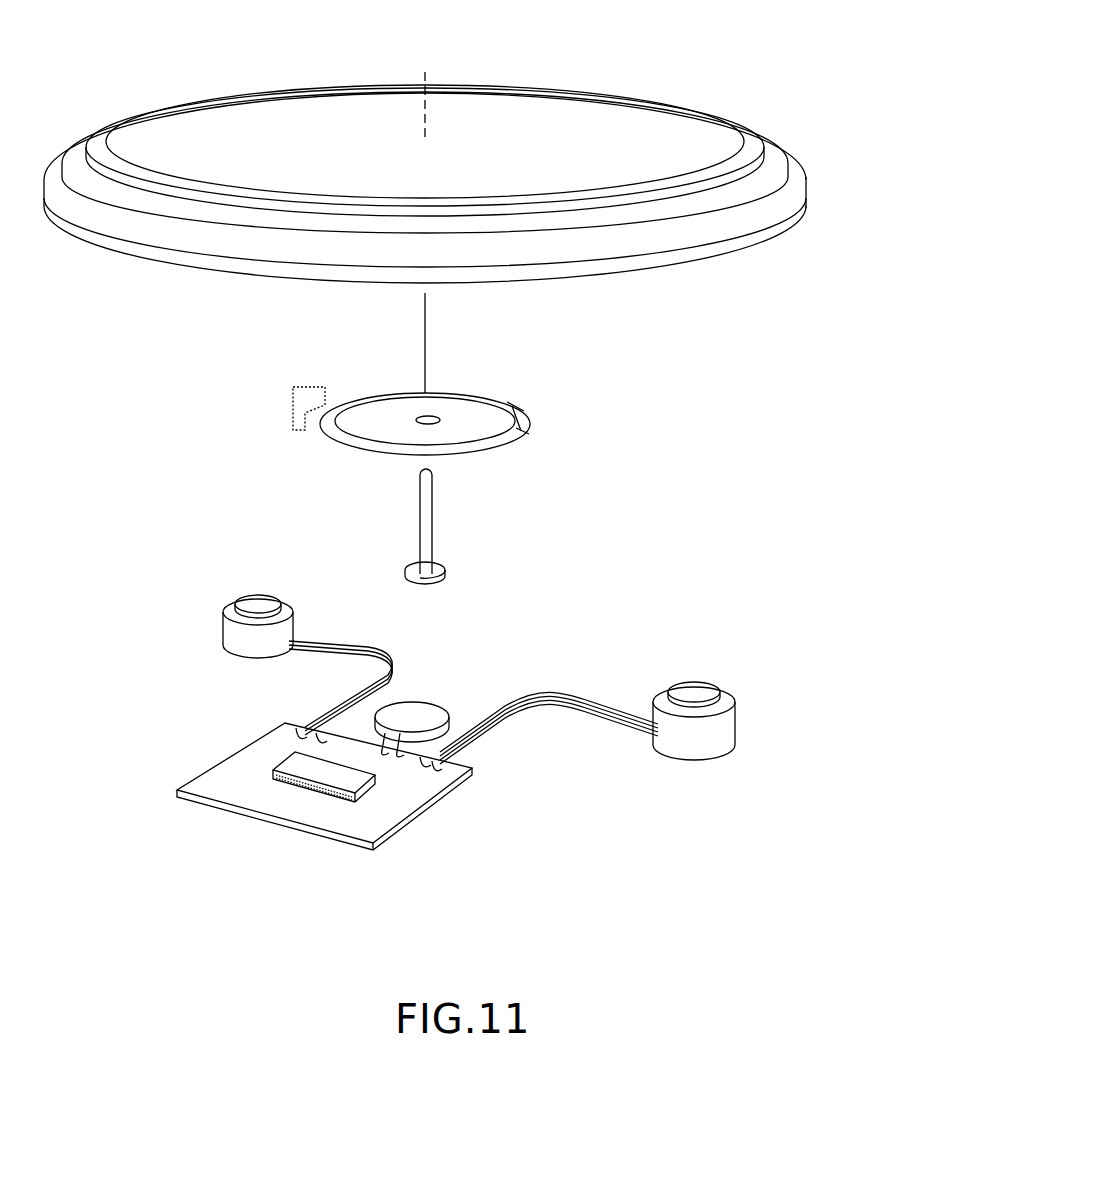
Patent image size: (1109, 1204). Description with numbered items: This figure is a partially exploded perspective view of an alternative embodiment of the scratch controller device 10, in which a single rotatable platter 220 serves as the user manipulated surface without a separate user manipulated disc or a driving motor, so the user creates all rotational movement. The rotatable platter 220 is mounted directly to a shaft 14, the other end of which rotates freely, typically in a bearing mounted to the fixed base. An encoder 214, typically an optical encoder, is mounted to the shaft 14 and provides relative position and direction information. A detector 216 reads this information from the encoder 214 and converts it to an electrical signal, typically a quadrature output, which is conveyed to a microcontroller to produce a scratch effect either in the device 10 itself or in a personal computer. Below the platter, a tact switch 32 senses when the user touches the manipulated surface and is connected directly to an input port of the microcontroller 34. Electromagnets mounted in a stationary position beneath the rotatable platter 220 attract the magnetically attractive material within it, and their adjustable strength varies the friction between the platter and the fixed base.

The device 10 is at (857, 78).
The rotatable platter 220 is at (807, 176).
The encoder 214 is at (530, 418).
The detector 216 is at (281, 408).
The shaft 14 is at (432, 478).
The tact switch 32 is at (453, 702).
The microcontroller 34 is at (372, 782).